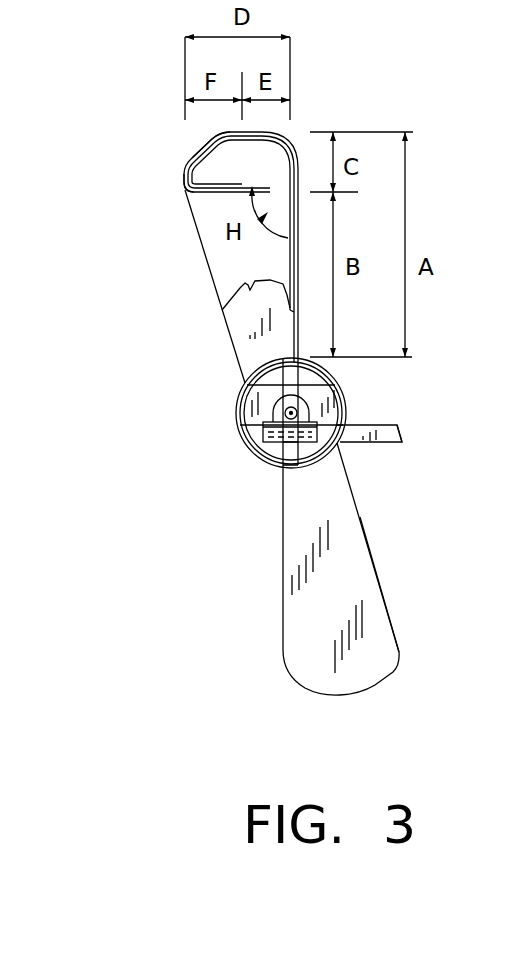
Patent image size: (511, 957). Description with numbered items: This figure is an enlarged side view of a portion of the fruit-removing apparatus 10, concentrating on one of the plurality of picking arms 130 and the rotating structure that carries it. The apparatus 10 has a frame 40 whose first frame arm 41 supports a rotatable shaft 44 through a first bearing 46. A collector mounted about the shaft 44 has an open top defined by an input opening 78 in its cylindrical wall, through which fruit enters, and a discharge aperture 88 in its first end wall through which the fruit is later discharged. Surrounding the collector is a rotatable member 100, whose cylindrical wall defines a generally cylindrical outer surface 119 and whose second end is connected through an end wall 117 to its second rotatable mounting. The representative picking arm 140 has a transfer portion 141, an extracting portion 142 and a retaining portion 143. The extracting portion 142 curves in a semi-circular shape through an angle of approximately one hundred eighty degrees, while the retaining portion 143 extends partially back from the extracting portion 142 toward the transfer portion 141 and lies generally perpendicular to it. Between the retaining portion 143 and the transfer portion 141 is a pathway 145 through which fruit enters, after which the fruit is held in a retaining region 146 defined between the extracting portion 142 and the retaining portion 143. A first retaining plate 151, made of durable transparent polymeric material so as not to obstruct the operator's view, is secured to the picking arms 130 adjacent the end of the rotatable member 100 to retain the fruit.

The apparatus 10 is at (320, 66).
The retaining region 146 is at (287, 208).
The picking arms 130 is at (380, 112).
The extracting portion 142 is at (200, 165).
The retaining portion 143 is at (200, 190).
The pathway 145 is at (260, 220).
The transfer portion 141 is at (285, 273).
The picking arm 140 is at (285, 292).
The input opening 78 is at (242, 370).
The generally cylindrical outer surface 119 is at (237, 408).
The rotatable member 100 is at (345, 397).
The rotatable shaft 44 is at (273, 445).
The first bearing 46 is at (237, 430).
The discharge aperture 88 is at (257, 441).
The frame 40 is at (373, 445).
The first frame arm 41 is at (400, 430).
The first retaining plate 151 is at (348, 580).
The end wall 117 is at (434, 579).